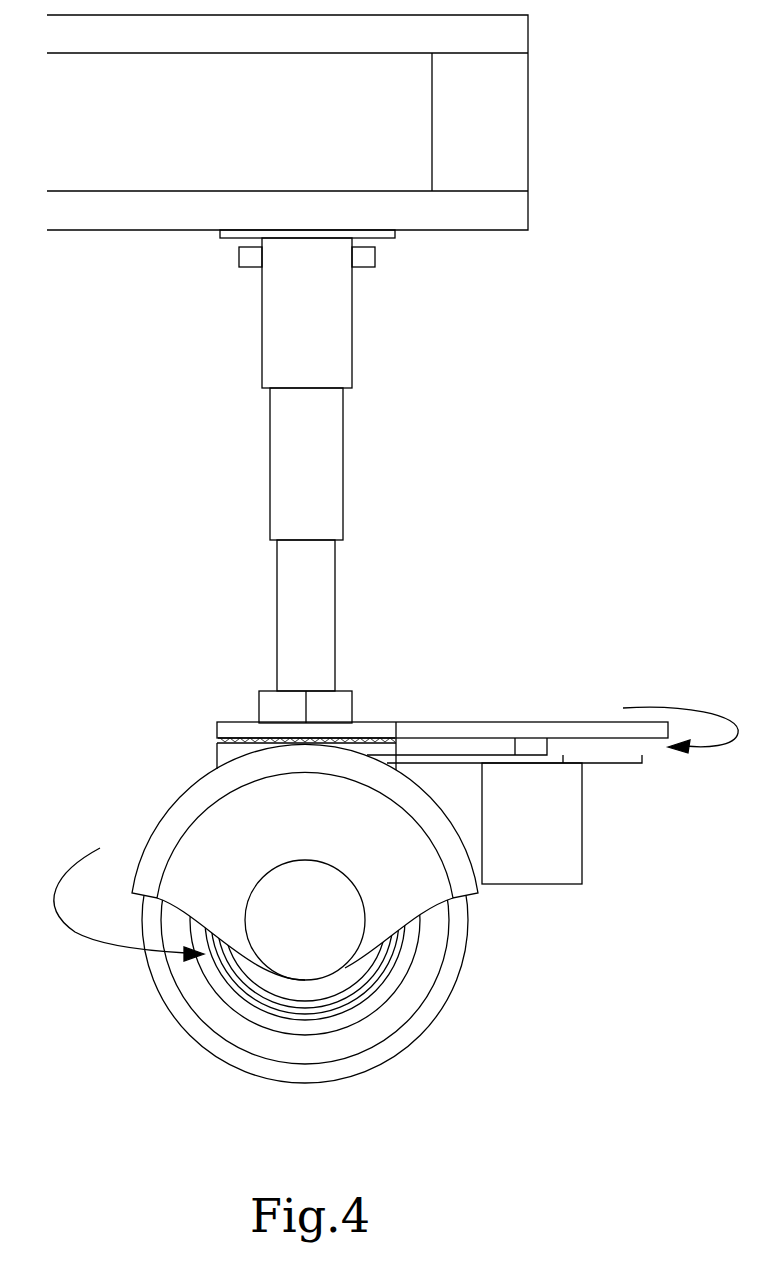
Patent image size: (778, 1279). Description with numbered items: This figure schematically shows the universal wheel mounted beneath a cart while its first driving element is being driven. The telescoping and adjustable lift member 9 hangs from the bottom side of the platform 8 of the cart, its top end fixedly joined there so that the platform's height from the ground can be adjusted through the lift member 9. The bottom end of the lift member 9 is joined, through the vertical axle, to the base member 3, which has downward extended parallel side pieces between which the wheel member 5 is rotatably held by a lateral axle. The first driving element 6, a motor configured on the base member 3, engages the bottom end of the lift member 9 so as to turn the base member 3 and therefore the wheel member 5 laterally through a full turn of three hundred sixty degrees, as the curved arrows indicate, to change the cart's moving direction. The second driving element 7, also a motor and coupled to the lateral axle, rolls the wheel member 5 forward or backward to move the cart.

The base member 3 is at (187, 803).
The wheel member 5 is at (440, 990).
The first driving element 6 is at (567, 825).
The second driving element 7 is at (281, 952).
The platform 8 is at (500, 128).
The lift member 9 is at (325, 465).